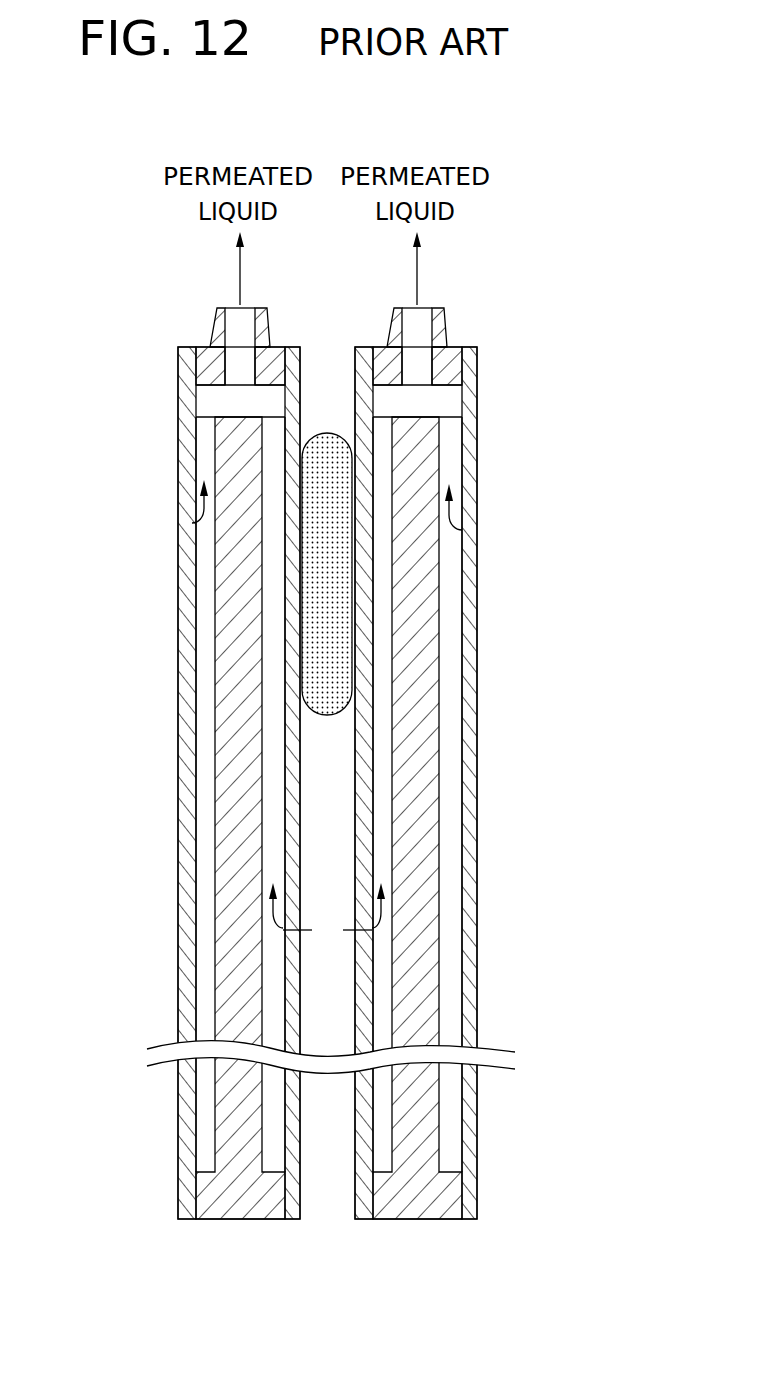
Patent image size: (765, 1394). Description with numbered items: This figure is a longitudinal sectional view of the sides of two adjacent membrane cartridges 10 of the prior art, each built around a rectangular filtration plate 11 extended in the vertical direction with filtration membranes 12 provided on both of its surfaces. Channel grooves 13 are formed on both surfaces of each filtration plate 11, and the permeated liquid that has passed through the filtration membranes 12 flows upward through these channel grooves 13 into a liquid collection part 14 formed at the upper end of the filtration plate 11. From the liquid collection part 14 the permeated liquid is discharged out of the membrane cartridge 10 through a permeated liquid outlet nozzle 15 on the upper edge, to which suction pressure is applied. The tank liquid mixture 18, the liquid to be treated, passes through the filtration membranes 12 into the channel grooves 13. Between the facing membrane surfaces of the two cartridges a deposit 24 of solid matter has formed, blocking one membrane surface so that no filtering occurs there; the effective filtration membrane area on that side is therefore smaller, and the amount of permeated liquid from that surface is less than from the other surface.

The membrane cartridge 10 is at (160, 764).
The filtration plate 11 is at (223, 1212).
The filtration membrane 12 is at (185, 928).
The channel groove 13 is at (210, 1003).
The liquid collection part 14 is at (207, 395).
The permeated liquid outlet nozzle 15 is at (207, 320).
The tank liquid mixture 18 is at (192, 523).
The deposit 24 is at (322, 430).